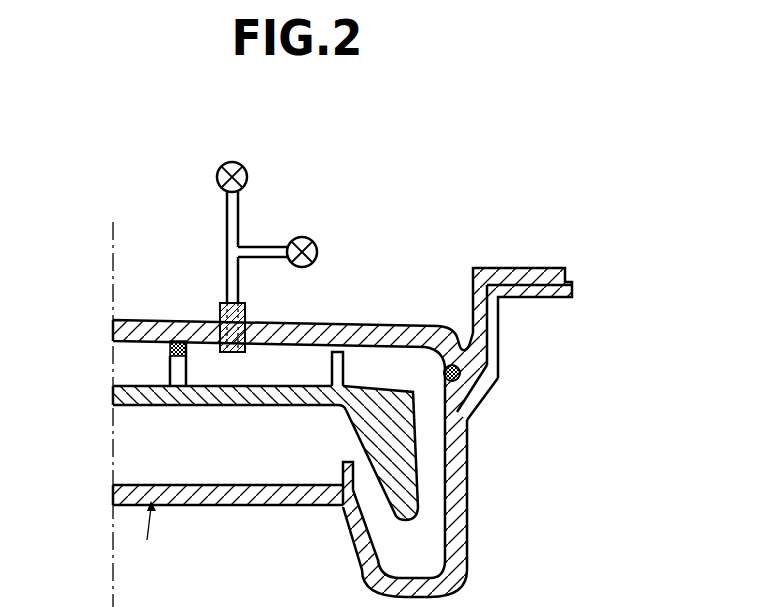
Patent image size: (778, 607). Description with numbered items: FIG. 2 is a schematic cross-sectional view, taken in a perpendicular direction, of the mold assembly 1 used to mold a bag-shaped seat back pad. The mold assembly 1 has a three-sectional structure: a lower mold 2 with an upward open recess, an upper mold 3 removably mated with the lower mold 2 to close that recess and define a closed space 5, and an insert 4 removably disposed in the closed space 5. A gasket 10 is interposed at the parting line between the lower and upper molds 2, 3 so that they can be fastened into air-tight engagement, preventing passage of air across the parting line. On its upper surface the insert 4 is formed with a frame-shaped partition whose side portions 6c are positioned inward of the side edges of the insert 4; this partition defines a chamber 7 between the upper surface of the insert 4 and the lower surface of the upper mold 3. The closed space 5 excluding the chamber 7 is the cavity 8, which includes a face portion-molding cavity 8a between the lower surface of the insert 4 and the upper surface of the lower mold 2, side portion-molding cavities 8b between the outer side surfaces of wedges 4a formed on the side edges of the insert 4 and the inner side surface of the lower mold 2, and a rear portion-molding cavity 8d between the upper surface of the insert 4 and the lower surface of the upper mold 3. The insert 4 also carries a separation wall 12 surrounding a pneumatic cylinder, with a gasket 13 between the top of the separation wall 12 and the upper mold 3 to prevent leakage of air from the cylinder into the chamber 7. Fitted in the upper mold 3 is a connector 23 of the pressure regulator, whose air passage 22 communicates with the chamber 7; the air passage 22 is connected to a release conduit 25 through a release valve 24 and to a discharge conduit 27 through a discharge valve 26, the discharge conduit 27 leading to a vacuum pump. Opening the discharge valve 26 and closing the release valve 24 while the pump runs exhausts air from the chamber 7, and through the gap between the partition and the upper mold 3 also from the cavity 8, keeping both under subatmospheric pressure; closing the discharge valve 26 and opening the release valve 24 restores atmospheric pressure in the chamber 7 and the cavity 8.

The mold assembly 1 is at (148, 536).
The lower mold 2 is at (235, 497).
The upper mold 3 is at (443, 325).
The insert 4 is at (122, 390).
The wedges 4a is at (410, 494).
The closed space 5 is at (198, 472).
The side portions 6c is at (360, 333).
The chamber 7 is at (300, 360).
The cavity 8 is at (148, 453).
The face portion-molding cavity 8a is at (300, 470).
The side portion-molding cavities 8b is at (433, 457).
The rear portion-molding cavity 8d is at (447, 410).
The gasket 10 is at (467, 377).
The separation wall 12 is at (172, 368).
The gasket 13 is at (174, 340).
The air passage 22 is at (247, 310).
The connector 23 is at (216, 304).
The release valve 24 is at (318, 247).
The release conduit 25 is at (272, 248).
The discharge valve 26 is at (231, 161).
The discharge conduit 27 is at (227, 212).